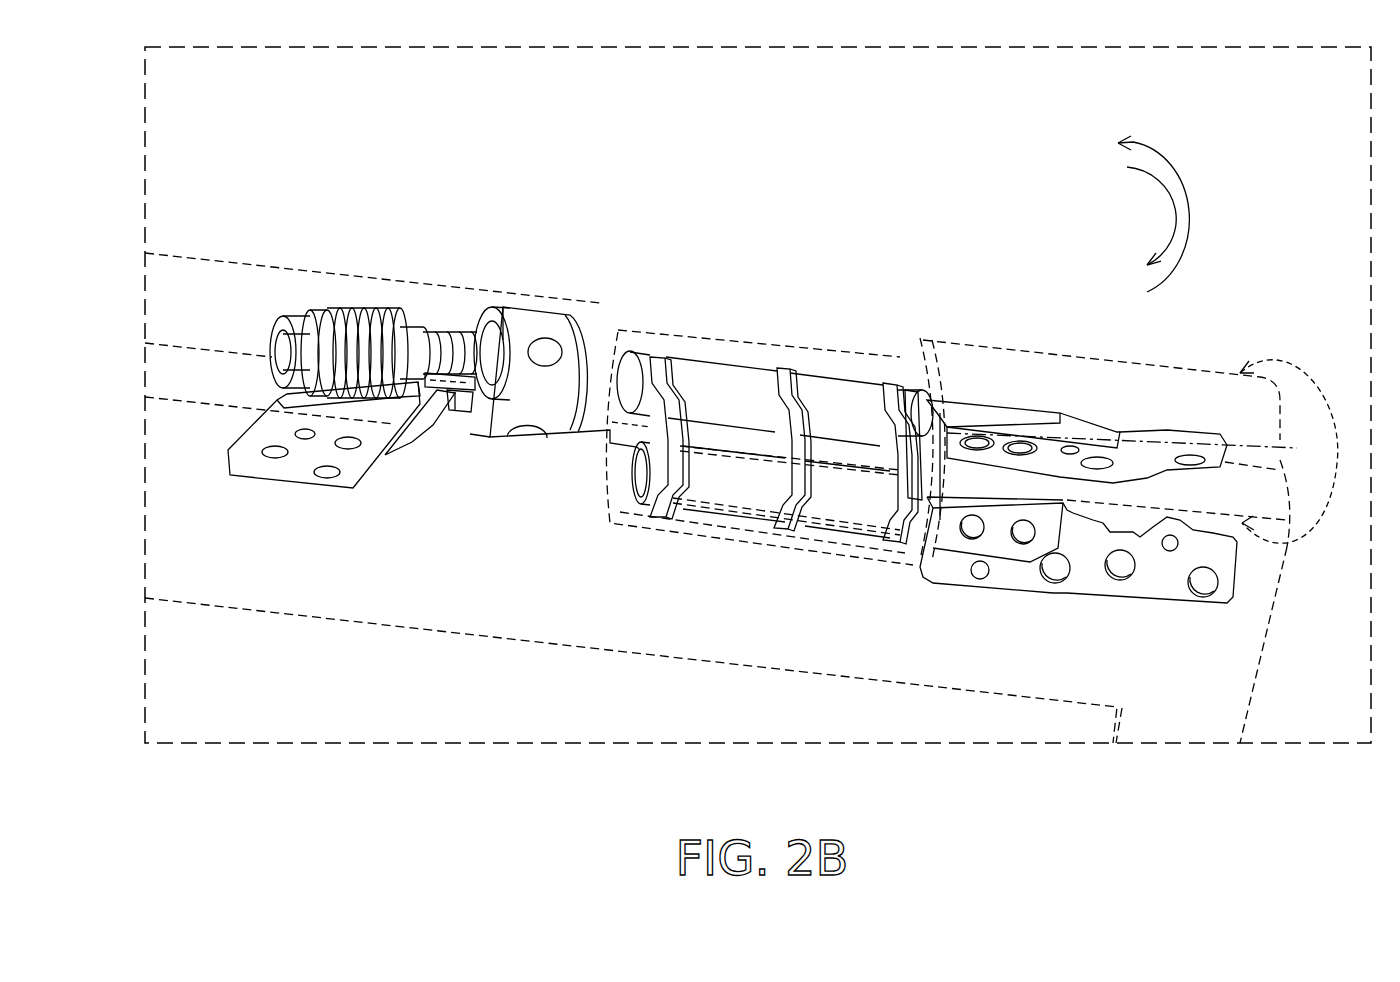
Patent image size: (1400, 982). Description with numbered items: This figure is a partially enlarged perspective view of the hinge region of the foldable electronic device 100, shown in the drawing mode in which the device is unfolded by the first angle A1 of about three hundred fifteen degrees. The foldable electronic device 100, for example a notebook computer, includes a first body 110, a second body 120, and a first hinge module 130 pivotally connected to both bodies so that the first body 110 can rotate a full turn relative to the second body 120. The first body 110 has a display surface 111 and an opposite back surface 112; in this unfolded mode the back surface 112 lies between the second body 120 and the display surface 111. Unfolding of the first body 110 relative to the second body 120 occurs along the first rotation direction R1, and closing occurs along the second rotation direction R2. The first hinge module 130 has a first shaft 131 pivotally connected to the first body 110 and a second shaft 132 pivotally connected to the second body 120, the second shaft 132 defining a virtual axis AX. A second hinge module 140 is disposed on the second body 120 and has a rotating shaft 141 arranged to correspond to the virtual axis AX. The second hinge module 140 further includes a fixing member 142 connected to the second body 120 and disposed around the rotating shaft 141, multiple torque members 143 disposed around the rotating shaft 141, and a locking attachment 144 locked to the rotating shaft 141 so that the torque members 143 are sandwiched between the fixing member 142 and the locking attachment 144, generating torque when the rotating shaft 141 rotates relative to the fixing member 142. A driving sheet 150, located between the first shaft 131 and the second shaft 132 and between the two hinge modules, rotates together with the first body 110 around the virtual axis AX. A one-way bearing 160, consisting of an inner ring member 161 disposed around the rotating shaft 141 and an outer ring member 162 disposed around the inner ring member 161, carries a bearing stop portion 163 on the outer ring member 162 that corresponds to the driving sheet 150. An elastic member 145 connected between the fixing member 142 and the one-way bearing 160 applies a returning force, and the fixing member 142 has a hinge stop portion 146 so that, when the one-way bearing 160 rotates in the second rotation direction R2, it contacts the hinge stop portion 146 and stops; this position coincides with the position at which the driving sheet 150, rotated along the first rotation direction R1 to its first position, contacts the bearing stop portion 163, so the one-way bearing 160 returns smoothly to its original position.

The foldable electronic device 100 is at (1295, 810).
The first body 110 is at (231, 372).
The display surface 111 is at (188, 397).
The back surface 112 is at (183, 345).
The second body 120 is at (185, 266).
The first hinge module 130 is at (805, 270).
The first shaft 131 is at (740, 480).
The second shaft 132 is at (710, 380).
The second hinge module 140 is at (550, 160).
The rotating shaft 141 is at (493, 313).
The fixing member 142 is at (433, 328).
The torque members 143 is at (393, 315).
The locking attachment 144 is at (300, 322).
The elastic member 145 is at (470, 317).
The hinge stop portion 146 is at (443, 383).
The driving sheet 150 is at (637, 423).
The one-way bearing 160 is at (453, 568).
The inner ring member 161 is at (525, 392).
The outer ring member 162 is at (532, 407).
The bearing stop portion 163 is at (576, 428).
The first rotation direction R1 is at (1144, 224).
The second rotation direction R2 is at (1136, 209).
The first angle A1 is at (1289, 437).
The virtual axis AX is at (1315, 452).